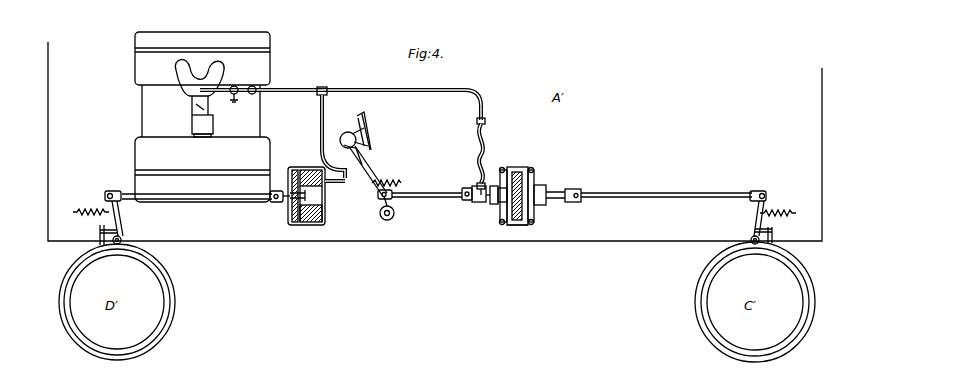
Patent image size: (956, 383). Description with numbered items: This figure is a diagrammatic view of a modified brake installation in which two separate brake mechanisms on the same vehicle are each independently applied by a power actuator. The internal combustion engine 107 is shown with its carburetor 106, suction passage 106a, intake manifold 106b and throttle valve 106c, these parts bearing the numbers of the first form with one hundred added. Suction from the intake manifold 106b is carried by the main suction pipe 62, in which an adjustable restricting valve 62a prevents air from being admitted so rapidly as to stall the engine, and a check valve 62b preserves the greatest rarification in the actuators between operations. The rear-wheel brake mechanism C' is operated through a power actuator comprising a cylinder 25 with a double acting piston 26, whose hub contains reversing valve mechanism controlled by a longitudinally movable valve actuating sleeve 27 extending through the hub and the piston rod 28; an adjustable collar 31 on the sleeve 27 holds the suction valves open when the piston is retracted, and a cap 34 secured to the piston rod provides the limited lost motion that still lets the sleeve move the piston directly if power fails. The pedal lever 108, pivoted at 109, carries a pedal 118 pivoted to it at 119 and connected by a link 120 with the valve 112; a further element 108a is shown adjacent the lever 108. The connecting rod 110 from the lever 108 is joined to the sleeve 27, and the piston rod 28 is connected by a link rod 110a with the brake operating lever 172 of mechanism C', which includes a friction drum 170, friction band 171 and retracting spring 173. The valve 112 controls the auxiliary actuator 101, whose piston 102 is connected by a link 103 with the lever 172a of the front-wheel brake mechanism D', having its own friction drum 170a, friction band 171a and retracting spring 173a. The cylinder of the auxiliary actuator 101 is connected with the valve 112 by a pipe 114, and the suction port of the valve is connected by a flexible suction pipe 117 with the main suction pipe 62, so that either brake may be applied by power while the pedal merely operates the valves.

The internal combustion engine 107 is at (137, 52).
The carburetor 106 is at (193, 124).
The suction passage 106a is at (190, 95).
The intake manifold 106b is at (178, 73).
The throttle valve 106c is at (196, 108).
The link 103 is at (208, 199).
The suction pipe 62 is at (390, 90).
The adjustable restricting valve 62a is at (237, 88).
The check valve 62b is at (256, 88).
The suction pipe 117 is at (320, 116).
The auxiliary actuator 101 is at (310, 167).
The piston 102 is at (307, 225).
The pipe 114 is at (343, 186).
The valve 112 is at (347, 132).
The pedal 118 is at (368, 145).
The pivot 119 is at (370, 126).
The link 120 is at (365, 116).
The pedal lever 108 is at (376, 203).
The spring 108a is at (390, 182).
The pivot 109 is at (387, 220).
The link rod 110 is at (442, 188).
The valve actuating sleeve 27 is at (476, 198).
The adjustable collar 31 is at (494, 202).
The cylinder 25 is at (515, 170).
The double acting piston 26 is at (520, 233).
The piston rod 28 is at (565, 190).
The cap 34 is at (587, 186).
The link rod 110a is at (687, 194).
The brake operating lever 172 is at (756, 222).
The retracting spring 173 is at (783, 209).
The lever 172a is at (118, 222).
The retracting spring 173a is at (84, 210).
The friction drum 170 is at (735, 345).
The friction band 171 is at (704, 330).
The friction drum 170a is at (111, 346).
The friction band 171a is at (148, 352).